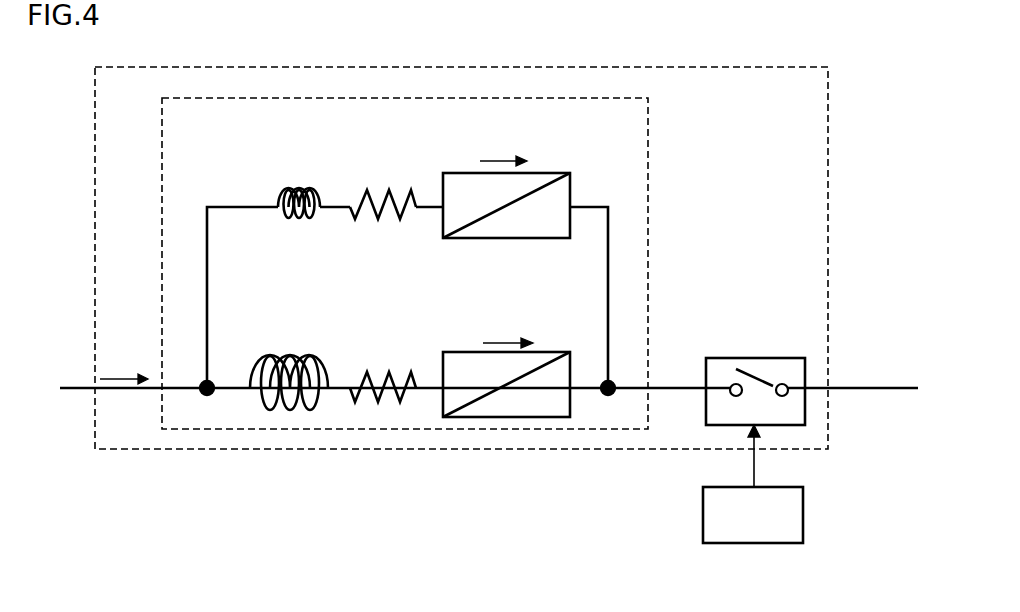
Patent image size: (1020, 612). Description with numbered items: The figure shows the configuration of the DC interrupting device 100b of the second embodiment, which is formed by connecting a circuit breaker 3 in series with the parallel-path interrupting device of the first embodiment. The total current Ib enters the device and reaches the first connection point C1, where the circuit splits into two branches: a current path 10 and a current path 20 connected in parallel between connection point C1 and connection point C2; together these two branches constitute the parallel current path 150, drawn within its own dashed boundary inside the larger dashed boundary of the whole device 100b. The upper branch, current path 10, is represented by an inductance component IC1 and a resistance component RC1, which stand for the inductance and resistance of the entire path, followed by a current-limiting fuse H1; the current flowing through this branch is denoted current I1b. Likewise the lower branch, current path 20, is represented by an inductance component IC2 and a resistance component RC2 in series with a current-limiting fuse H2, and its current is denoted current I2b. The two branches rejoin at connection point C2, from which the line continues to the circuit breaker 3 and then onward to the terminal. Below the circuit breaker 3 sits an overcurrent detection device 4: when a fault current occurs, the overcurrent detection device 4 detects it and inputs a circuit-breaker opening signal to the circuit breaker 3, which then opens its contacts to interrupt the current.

The DC interrupting device 100b is at (195, 66).
The parallel current path 150 is at (648, 240).
The current path 10 is at (255, 170).
The current path 20 is at (360, 314).
The inductance component IC1 is at (298, 190).
The resistance component RC1 is at (365, 191).
The current-limiting fuse H1 is at (457, 172).
The inductance component IC2 is at (283, 356).
The resistance component RC2 is at (387, 372).
The current-limiting fuse H2 is at (457, 352).
The connection point C1 is at (202, 384).
The connection point C2 is at (613, 383).
The total current Ib is at (122, 378).
The current I1b is at (500, 161).
The current I2b is at (504, 342).
The circuit breaker 3 is at (752, 358).
The overcurrent detection device 4 is at (703, 518).